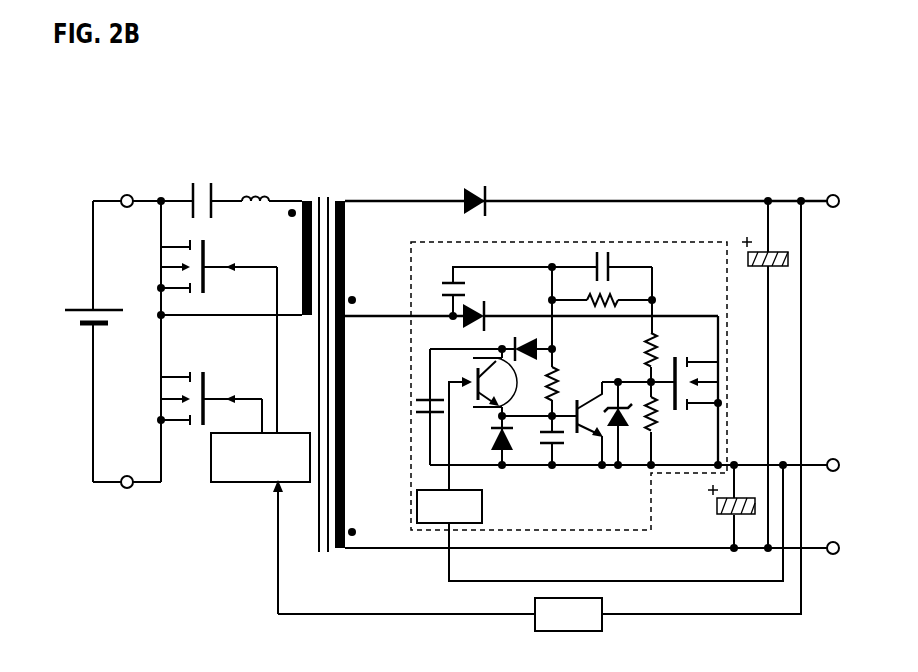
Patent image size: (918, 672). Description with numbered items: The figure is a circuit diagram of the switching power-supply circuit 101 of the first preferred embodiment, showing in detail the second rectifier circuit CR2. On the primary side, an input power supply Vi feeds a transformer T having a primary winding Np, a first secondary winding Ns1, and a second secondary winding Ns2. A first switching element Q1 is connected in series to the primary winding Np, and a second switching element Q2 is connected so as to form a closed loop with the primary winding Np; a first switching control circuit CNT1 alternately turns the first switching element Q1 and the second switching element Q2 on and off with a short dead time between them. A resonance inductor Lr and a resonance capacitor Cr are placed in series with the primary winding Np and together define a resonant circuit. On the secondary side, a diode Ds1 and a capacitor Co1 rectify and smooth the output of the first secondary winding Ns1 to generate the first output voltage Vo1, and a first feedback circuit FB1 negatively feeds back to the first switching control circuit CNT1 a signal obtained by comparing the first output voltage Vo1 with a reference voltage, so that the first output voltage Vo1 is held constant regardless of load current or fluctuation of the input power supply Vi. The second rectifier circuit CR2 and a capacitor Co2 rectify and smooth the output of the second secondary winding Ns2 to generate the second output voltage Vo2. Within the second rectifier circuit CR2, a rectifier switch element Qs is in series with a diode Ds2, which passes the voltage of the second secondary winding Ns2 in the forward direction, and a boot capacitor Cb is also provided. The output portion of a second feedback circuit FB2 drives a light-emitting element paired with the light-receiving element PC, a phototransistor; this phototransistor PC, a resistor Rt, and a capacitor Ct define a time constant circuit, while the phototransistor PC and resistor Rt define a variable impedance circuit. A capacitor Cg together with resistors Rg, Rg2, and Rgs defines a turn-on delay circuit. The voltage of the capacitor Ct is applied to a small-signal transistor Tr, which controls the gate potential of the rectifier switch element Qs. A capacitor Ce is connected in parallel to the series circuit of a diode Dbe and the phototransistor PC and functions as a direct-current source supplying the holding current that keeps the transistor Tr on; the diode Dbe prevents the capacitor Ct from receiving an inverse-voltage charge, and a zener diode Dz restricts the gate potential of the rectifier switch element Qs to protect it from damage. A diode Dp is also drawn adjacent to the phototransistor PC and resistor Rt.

The switching power-supply circuit 101 is at (757, 125).
The input power supply Vi is at (94, 300).
The resonance capacitor Cr is at (202, 189).
The resonance inductor Lr is at (255, 185).
The first switching element Q1 is at (195, 398).
The second switching element Q2 is at (203, 266).
The first switching control circuit CNT1 is at (260, 457).
The transformer T is at (323, 188).
The primary winding Np is at (293, 258).
The first secondary winding Ns1 is at (356, 205).
The second secondary winding Ns2 is at (356, 330).
The diode Ds1 is at (474, 187).
The diode Ds2 is at (489, 311).
The boot capacitor Cb is at (468, 289).
The second rectifier circuit CR2 is at (505, 240).
The capacitor Cg is at (604, 250).
The resistor Rg2 is at (620, 296).
The resistor Rg is at (634, 350).
The resistor Rgs is at (670, 418).
The rectifier switch element Qs is at (696, 371).
The diode Dp is at (540, 343).
The light-receiving element PC is at (479, 381).
The resistor Rt is at (566, 384).
The capacitor Ce is at (416, 401).
The diode Dbe is at (484, 439).
The capacitor Ct is at (546, 450).
The small-signal transistor Tr is at (585, 440).
The zener diode Dz is at (629, 440).
The first feedback circuit FB1 is at (568, 614).
The second feedback circuit FB2 is at (449, 506).
The capacitor Co1 is at (793, 260).
The capacitor Co2 is at (713, 502).
The first output voltage Vo1 is at (833, 178).
The second output voltage Vo2 is at (833, 445).